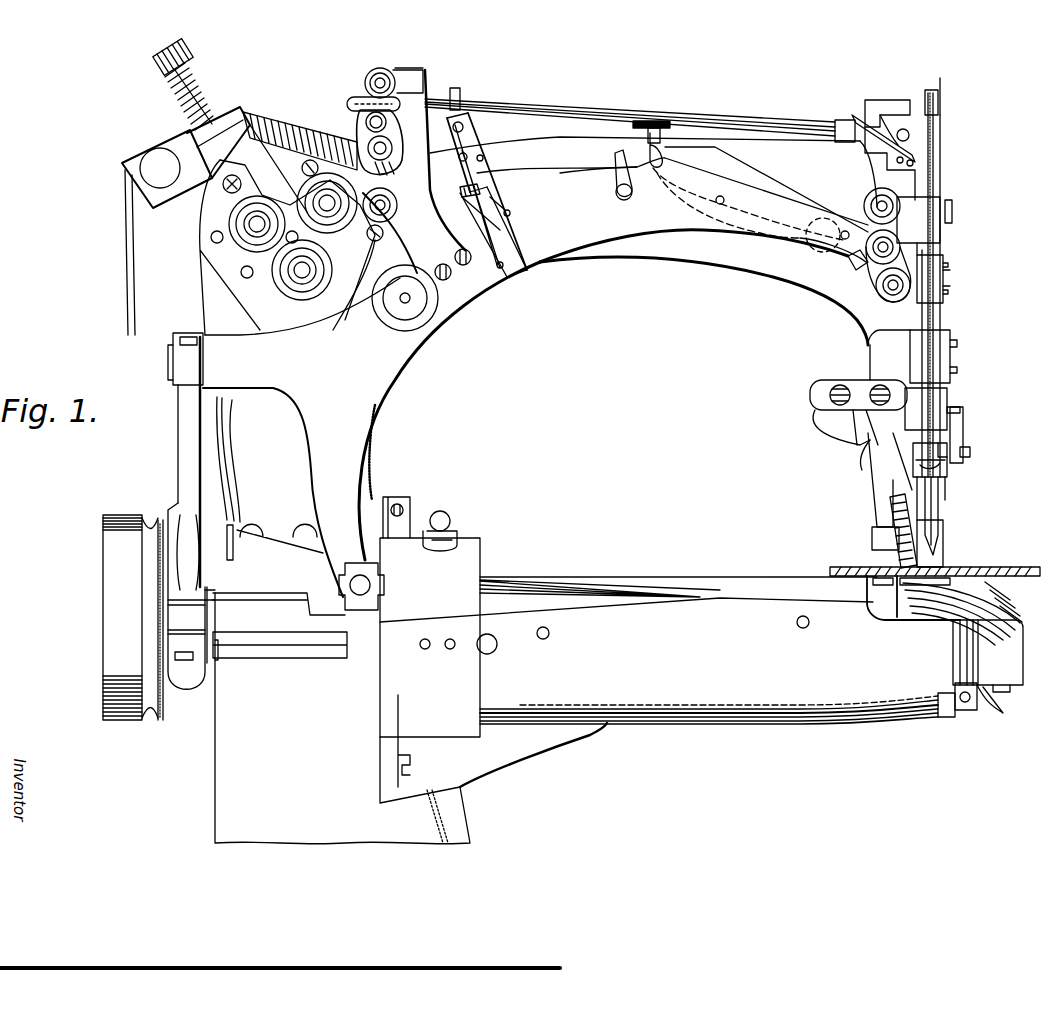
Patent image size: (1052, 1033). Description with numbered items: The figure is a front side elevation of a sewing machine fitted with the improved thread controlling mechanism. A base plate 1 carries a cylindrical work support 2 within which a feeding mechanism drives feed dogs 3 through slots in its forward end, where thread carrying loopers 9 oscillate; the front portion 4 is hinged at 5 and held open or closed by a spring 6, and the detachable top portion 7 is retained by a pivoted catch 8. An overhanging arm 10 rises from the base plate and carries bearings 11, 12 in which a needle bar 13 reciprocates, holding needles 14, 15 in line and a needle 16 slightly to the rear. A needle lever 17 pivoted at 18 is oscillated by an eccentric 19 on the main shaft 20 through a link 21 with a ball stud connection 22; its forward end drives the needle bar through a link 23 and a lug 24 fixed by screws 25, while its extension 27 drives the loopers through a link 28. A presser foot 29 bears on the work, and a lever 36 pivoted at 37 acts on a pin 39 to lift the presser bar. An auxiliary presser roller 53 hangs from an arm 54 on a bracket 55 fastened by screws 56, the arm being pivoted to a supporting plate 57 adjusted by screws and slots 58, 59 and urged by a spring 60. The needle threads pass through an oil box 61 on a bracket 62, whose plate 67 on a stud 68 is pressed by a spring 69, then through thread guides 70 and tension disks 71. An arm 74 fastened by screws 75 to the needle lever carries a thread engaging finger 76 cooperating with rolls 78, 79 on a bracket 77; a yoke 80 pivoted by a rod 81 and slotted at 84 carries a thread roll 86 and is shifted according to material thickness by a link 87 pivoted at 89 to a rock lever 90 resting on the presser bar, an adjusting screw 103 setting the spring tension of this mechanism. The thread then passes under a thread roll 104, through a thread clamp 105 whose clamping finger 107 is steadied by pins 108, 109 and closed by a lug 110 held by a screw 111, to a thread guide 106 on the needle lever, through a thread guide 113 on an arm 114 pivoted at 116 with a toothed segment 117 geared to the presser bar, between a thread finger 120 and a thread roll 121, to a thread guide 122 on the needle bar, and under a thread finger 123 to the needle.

The base plate 1 is at (310, 718).
The work support 2 is at (687, 682).
The feed dogs 3 is at (880, 572).
The front portion 4 is at (988, 652).
The hinge 5 is at (960, 695).
The spring 6 is at (1003, 708).
The top portion of the work support 7 is at (478, 555).
The pivoted catch 8 is at (441, 512).
The loopers 9 is at (985, 613).
The overhanging arm 10 is at (713, 259).
The bearing 11 is at (952, 210).
The bearing 12 is at (947, 397).
The needle bar 13 is at (935, 320).
The needle 14 is at (940, 525).
The needle 15 is at (943, 510).
The needle 16 is at (945, 493).
The needle lever 17 is at (598, 199).
The pivot 18 is at (410, 318).
The eccentric 19 is at (187, 690).
The main shaft 20 is at (217, 660).
The link 21 is at (178, 446).
The ball stud connection 22 is at (172, 365).
The link 23 is at (876, 278).
The lug 24 is at (948, 263).
The screws 25 is at (950, 270).
The needle lever extension 27 is at (289, 492).
The link 28 is at (362, 573).
The presser foot 29 is at (872, 540).
The lever 36 is at (963, 435).
The pivot 37 is at (970, 453).
The pin 39 is at (962, 409).
The auxiliary presser roller 53 is at (888, 508).
The arm 54 is at (875, 490).
The bracket 55 is at (858, 382).
The screws 56 is at (957, 343).
The supporting plate 57 is at (856, 440).
The screws 58 is at (838, 385).
The slots 59 is at (822, 412).
The spring 60 is at (862, 465).
The oil box 61 is at (135, 165).
The bracket 62 is at (270, 150).
The plate 67 is at (230, 108).
The stud 68 is at (193, 77).
The spring 69 is at (180, 95).
The thread guides 70 is at (327, 240).
The tension disks 71 is at (246, 243).
The arm 74 is at (387, 278).
The screws 75 is at (444, 280).
The thread engaging finger 76 is at (428, 78).
The bracket 77 is at (389, 222).
The thread guiding roll 78 is at (397, 204).
The thread guiding roll 79 is at (365, 121).
The yoke 80 is at (392, 148).
The pivoted rod 81 is at (396, 166).
The slots 84 is at (365, 100).
The thread roll 86 is at (381, 72).
The link 87 is at (548, 102).
The pivot 89 is at (860, 128).
The rock lever 90 is at (880, 178).
The adjusting screw 103 is at (648, 132).
The thread roll 104 is at (383, 233).
The thread clamp 105 is at (500, 172).
The thread guide 106 is at (618, 180).
The clamping finger 107 is at (485, 140).
The pin 108 is at (480, 145).
The pin 109 is at (462, 113).
The lug 110 is at (492, 200).
The screw 111 is at (505, 230).
The thread guide 113 is at (658, 140).
The arm 114 is at (676, 197).
The pivot 116 is at (805, 250).
The toothed segment 117 is at (856, 268).
The thread finger 120 is at (880, 100).
The thread roll 121 is at (905, 128).
The thread guide 122 is at (942, 103).
The thread finger 123 is at (947, 465).